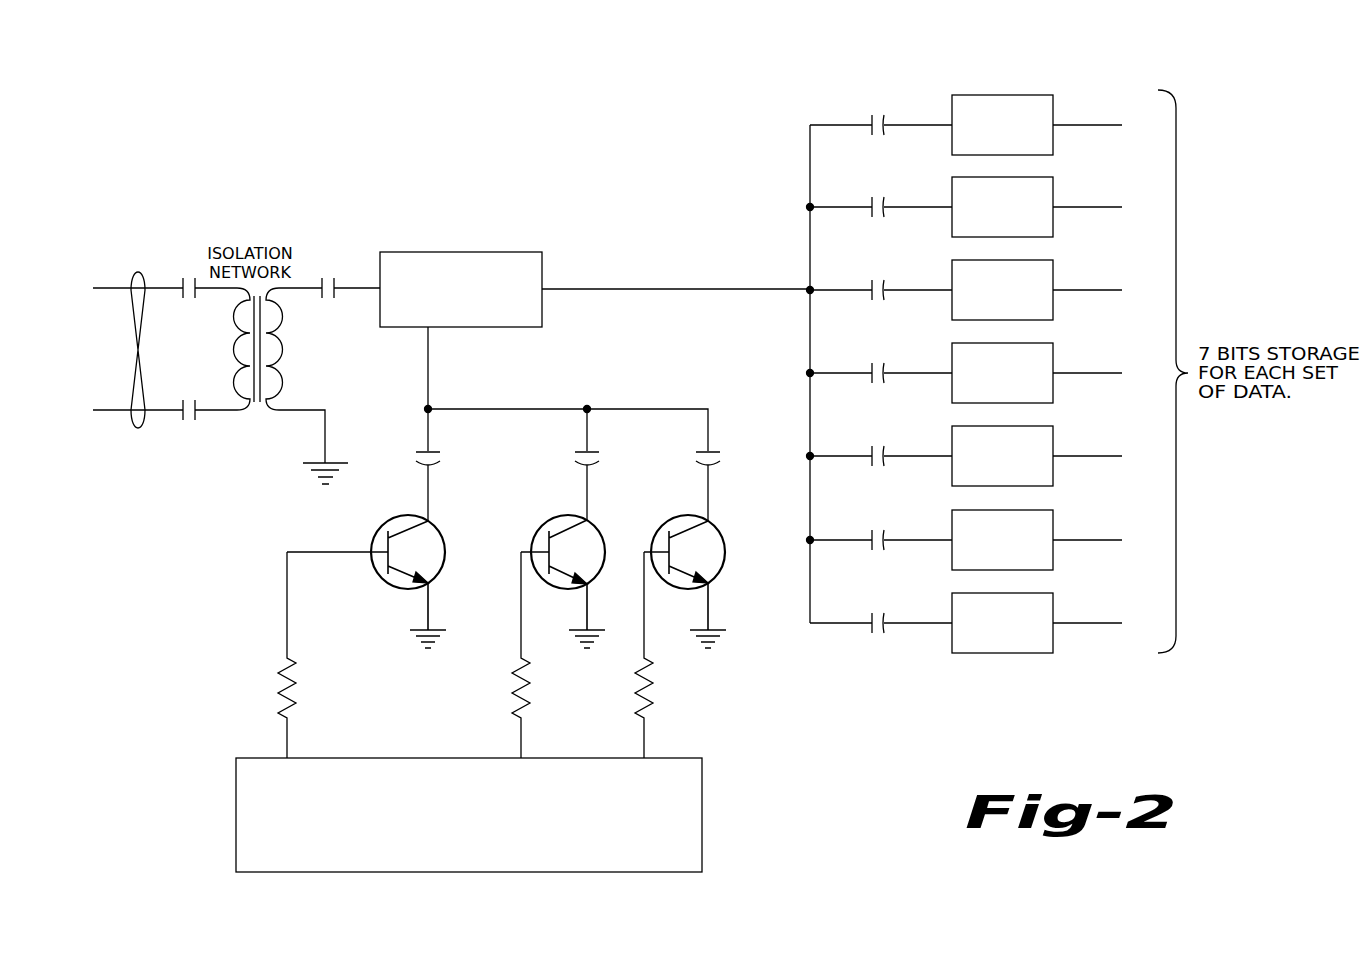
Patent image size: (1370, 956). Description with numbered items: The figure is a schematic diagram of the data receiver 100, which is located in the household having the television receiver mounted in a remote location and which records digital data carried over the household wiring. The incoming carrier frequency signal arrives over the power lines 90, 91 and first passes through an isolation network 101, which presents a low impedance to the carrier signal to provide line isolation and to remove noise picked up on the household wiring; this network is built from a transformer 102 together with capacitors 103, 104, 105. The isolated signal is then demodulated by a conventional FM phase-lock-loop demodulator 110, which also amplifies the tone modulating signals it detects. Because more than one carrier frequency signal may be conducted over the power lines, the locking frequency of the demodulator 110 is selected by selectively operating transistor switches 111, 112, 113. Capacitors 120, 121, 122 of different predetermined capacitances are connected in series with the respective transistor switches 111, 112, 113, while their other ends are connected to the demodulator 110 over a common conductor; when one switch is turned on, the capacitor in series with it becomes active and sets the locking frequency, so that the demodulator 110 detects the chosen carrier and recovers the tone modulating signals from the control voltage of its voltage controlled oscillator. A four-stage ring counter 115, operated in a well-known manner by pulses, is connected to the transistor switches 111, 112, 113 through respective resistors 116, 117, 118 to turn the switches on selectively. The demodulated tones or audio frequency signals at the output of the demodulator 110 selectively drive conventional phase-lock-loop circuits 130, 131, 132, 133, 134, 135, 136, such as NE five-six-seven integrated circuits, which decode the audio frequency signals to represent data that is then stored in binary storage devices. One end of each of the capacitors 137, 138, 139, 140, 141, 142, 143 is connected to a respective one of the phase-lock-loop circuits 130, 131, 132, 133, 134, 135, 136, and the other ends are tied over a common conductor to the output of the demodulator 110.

The power line 90 is at (153, 284).
The power line 91 is at (160, 414).
The data receiver 100 is at (571, 227).
The isolation network 101 is at (257, 400).
The transformer 102 is at (262, 337).
The capacitor 103 is at (183, 293).
The capacitor 104 is at (181, 406).
The capacitor 105 is at (322, 292).
The FM phase-lock-loop demodulator 110 is at (542, 273).
The transistor switch 111 is at (380, 578).
The transistor switch 112 is at (555, 584).
The transistor switch 113 is at (678, 584).
The four-stage ring counter 115 is at (437, 761).
The resistor 116 is at (297, 676).
The resistor 117 is at (531, 681).
The resistor 118 is at (655, 695).
The capacitor 120 is at (437, 457).
The capacitor 121 is at (595, 457).
The capacitor 122 is at (717, 457).
The phase-lock-loop circuit 130 is at (1053, 97).
The phase-lock-loop circuit 131 is at (1053, 179).
The phase-lock-loop circuit 132 is at (1053, 262).
The phase-lock-loop circuit 133 is at (1053, 345).
The phase-lock-loop circuit 134 is at (1053, 428).
The phase-lock-loop circuit 135 is at (1053, 512).
The phase-lock-loop circuit 136 is at (1053, 595).
The capacitor 137 is at (871, 120).
The capacitor 138 is at (871, 202).
The capacitor 139 is at (871, 285).
The capacitor 140 is at (871, 368).
The capacitor 141 is at (871, 451).
The capacitor 142 is at (871, 535).
The capacitor 143 is at (871, 618).